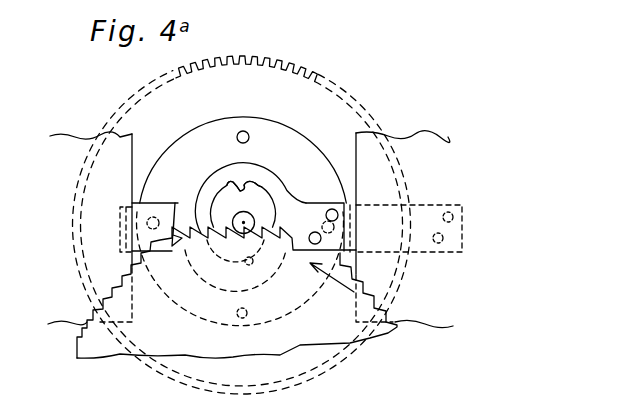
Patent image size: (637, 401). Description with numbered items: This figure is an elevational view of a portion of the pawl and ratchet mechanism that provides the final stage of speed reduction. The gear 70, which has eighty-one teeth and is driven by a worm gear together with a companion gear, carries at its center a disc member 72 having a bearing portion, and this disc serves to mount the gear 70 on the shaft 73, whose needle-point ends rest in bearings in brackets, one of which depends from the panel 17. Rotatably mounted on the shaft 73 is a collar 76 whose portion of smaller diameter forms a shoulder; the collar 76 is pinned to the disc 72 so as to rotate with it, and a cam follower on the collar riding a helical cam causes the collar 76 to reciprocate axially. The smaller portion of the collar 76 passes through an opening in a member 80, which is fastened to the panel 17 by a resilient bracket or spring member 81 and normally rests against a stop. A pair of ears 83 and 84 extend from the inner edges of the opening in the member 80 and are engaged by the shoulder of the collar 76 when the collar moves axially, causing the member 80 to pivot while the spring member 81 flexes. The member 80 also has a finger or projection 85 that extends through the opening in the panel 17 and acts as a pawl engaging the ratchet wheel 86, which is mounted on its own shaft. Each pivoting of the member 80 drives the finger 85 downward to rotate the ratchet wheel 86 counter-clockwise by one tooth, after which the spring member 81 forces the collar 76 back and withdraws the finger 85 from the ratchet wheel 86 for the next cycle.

The panel 17 is at (63, 133).
The gear 70 is at (260, 70).
The disc member 72 is at (276, 132).
The shaft 73 is at (242, 221).
The collar 76 is at (257, 213).
The member 80 is at (275, 181).
The resilient bracket or spring member 81 is at (344, 203).
The ear 83 is at (230, 186).
The ear 84 is at (258, 263).
The finger or pawl 85 is at (178, 203).
The ratchet wheel 86 is at (190, 344).